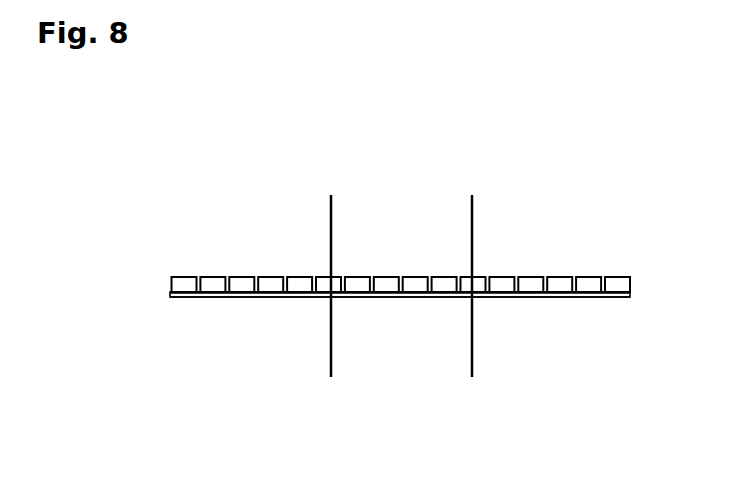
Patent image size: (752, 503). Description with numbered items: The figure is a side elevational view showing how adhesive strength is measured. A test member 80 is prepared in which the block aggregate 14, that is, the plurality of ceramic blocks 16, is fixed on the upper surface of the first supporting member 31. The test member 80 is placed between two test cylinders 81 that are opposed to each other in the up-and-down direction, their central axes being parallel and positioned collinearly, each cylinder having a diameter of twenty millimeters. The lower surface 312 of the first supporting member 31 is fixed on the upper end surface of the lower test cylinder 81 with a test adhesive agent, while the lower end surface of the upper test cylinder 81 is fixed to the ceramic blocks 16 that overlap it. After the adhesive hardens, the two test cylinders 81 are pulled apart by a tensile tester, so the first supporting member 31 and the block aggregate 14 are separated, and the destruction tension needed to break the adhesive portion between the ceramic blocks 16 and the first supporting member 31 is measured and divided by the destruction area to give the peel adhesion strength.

The test member 80 is at (170, 232).
The block aggregate 14 is at (270, 235).
The ceramic block 16 is at (215, 283).
The first supporting member 31 is at (202, 298).
The lower surface of the first supporting member 312 is at (278, 298).
The test cylinder 81 is at (473, 203).